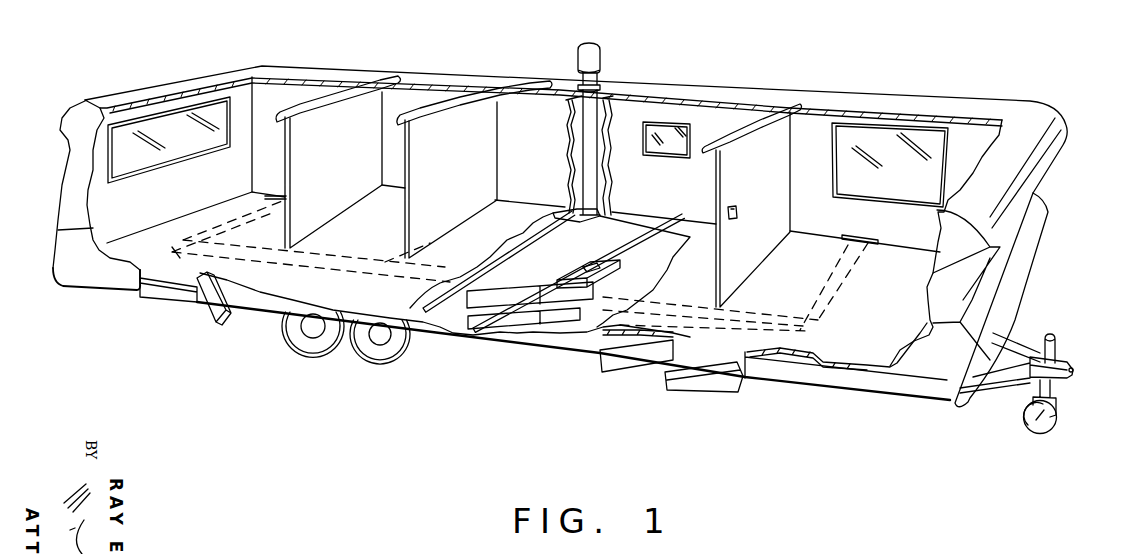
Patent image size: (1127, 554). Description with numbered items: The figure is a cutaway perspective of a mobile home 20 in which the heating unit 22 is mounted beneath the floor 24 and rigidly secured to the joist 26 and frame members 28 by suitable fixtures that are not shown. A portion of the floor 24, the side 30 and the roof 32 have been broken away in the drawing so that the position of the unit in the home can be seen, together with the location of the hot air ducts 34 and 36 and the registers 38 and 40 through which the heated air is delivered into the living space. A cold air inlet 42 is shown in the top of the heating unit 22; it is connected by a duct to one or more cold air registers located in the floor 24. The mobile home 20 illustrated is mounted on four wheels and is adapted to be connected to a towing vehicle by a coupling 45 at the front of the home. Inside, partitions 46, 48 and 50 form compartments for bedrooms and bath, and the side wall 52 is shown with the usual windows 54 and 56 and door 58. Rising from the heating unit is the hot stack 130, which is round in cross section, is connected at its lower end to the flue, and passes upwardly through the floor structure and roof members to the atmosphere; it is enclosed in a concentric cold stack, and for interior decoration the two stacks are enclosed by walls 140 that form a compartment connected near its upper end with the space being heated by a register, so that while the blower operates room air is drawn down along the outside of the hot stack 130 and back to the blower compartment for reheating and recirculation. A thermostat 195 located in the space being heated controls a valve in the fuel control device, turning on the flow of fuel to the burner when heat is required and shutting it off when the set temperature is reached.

The mobile home 20 is at (1057, 180).
The heating unit 22 is at (550, 268).
The floor 24 is at (293, 295).
The joist 26 is at (497, 323).
The frame members 28 is at (455, 318).
The side 30 is at (71, 193).
The roof 32 is at (1030, 103).
The hot air duct 34 is at (297, 272).
The hot air duct 36 is at (820, 318).
The register 38 is at (272, 196).
The register 40 is at (851, 244).
The cold air inlet 42 is at (602, 262).
The coupling 45 is at (1068, 363).
The partition 46 is at (342, 202).
The partition 48 is at (443, 219).
The partition 50 is at (752, 260).
The side wall 52 is at (683, 110).
The window 54 is at (682, 147).
The window 56 is at (897, 195).
The door 58 is at (745, 378).
The hot stack 130 is at (588, 156).
The walls 140 is at (570, 180).
The thermostat 195 is at (733, 210).